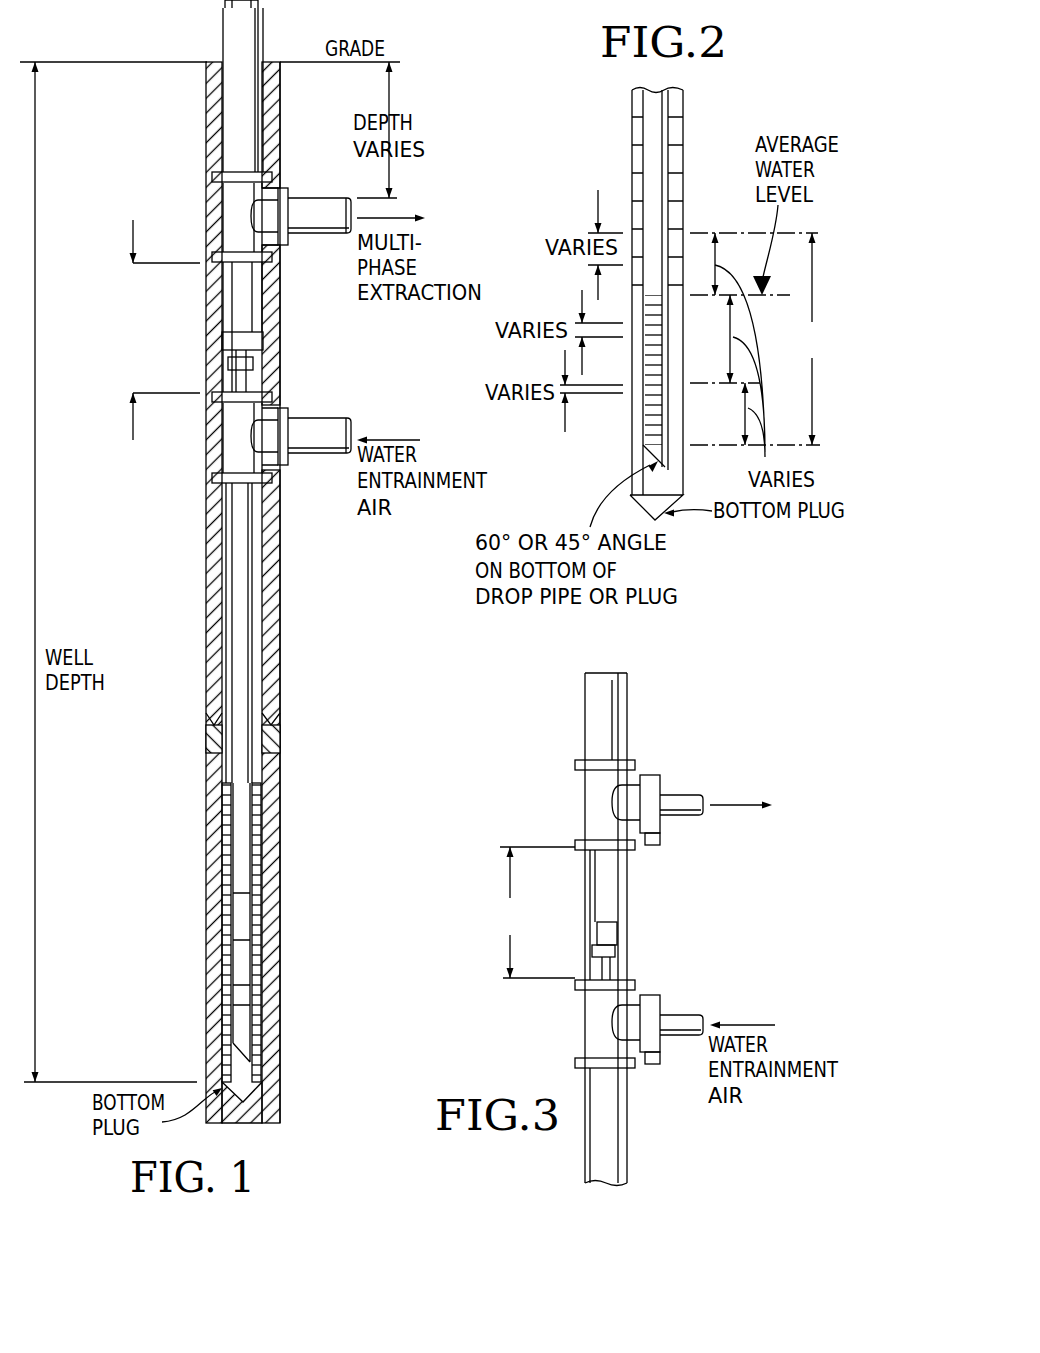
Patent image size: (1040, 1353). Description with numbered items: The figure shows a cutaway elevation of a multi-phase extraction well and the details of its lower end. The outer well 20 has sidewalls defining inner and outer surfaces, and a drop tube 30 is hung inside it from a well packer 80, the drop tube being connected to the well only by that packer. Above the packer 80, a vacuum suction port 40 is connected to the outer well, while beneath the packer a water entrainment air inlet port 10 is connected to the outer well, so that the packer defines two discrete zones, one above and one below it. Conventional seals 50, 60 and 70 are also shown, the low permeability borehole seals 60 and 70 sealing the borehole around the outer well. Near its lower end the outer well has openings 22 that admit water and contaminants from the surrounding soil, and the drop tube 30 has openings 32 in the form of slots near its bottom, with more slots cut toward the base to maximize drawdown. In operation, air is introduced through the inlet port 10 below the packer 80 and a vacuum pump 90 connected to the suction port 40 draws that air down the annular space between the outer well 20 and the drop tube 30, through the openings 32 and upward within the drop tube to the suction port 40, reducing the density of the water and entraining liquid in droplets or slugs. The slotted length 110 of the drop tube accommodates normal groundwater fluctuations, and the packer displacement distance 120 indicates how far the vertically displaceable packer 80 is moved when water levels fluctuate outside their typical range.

In FIG. 1, the water entrainment air inlet port 10 is at (308, 417).
In FIG. 3, the water entrainment air inlet port 10 is at (675, 1015).
In FIG. 1, the outer well 20 is at (265, 553).
In FIG. 2, the openings 22 is at (640, 144).
In FIG. 1, the drop tube 30 is at (252, 603).
In FIG. 2, the openings 32 is at (657, 228).
In FIG. 1, the vacuum suction port 40 is at (305, 197).
In FIG. 3, the vacuum suction port 40 is at (682, 797).
In FIG. 1, the seal 50 is at (212, 732).
In FIG. 1, the low permeability borehole seal 60 is at (280, 665).
In FIG. 1, the low permeability borehole seal 70 is at (215, 495).
In FIG. 1, the well packer 80 is at (247, 335).
In FIG. 3, the well packer 80 is at (608, 922).
In FIG. 3, the vacuum pump 90 is at (772, 910).
In FIG. 2, the length of the drop tube that has openings 110 is at (830, 353).
In FIG. 1, the packer displacement distance 120 is at (170, 376).
In FIG. 3, the packer displacement distance 120 is at (530, 928).